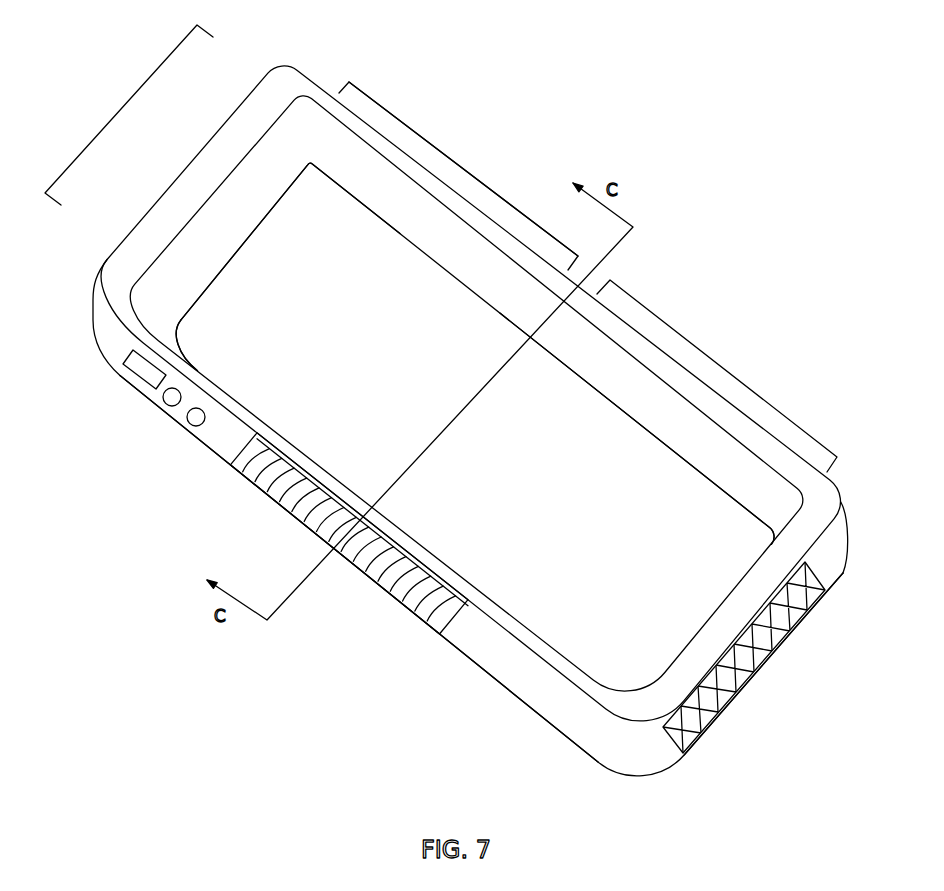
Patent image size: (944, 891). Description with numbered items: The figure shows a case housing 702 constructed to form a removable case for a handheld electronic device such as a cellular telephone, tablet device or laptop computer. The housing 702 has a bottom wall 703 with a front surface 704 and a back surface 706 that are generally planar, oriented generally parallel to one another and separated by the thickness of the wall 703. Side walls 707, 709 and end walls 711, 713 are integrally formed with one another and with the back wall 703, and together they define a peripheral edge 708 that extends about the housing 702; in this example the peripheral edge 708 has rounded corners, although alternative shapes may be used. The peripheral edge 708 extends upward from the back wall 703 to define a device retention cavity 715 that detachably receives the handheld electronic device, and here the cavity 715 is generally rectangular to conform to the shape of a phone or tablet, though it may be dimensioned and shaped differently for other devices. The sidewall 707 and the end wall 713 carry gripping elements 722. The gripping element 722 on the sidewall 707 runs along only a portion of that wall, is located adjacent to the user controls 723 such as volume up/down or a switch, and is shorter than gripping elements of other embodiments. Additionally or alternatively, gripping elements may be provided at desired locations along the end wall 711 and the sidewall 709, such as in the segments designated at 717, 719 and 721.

The case housing 702 is at (455, 86).
The bottom wall 703 is at (363, 381).
The front surface 704 is at (296, 215).
The back surface 706 is at (207, 454).
The side wall 707 is at (567, 713).
The peripheral edge 708 is at (131, 226).
The side wall 709 is at (714, 467).
The end wall 711 is at (239, 254).
The end wall 713 is at (711, 612).
The device retention cavity 715 is at (196, 334).
The segment 717 is at (464, 167).
The segment 719 is at (722, 367).
The segment 721 is at (120, 110).
The gripping element 722 is at (393, 583).
The user controls 723 is at (140, 386).